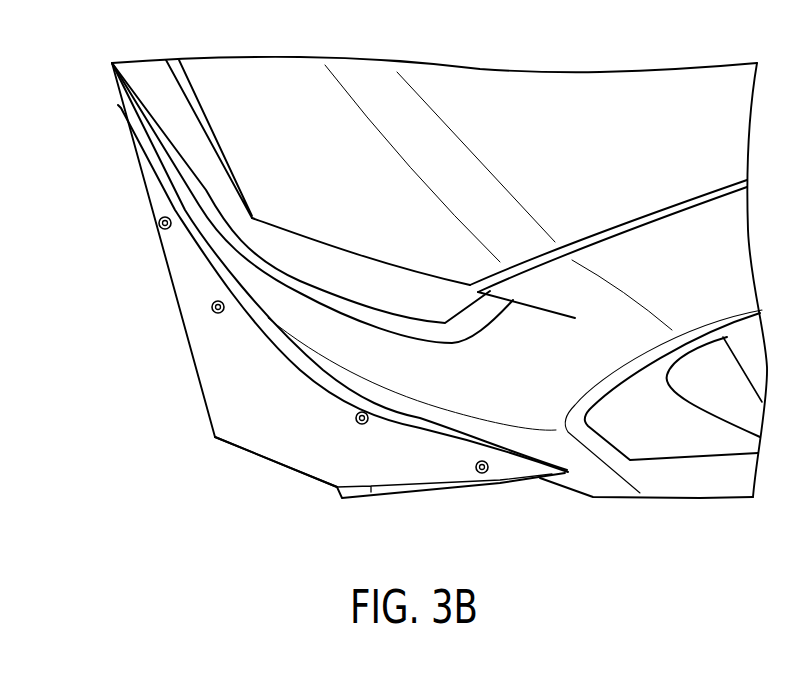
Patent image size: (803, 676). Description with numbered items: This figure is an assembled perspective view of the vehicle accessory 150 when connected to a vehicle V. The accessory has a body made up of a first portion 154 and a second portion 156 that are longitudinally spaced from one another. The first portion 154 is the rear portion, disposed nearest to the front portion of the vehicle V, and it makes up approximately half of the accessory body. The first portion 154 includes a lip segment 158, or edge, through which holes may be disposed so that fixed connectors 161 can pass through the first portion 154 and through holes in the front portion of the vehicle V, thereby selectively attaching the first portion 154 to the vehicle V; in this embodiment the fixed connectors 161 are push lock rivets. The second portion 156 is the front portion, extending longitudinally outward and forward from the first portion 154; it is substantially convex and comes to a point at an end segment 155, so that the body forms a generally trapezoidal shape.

The vehicle accessory 150 is at (107, 207).
The first portion 154 is at (285, 375).
The end segment 155 is at (215, 437).
The second portion 156 is at (205, 400).
The lip segment 158 is at (488, 442).
The fixed connectors 161 is at (477, 473).
The vehicle V is at (525, 93).